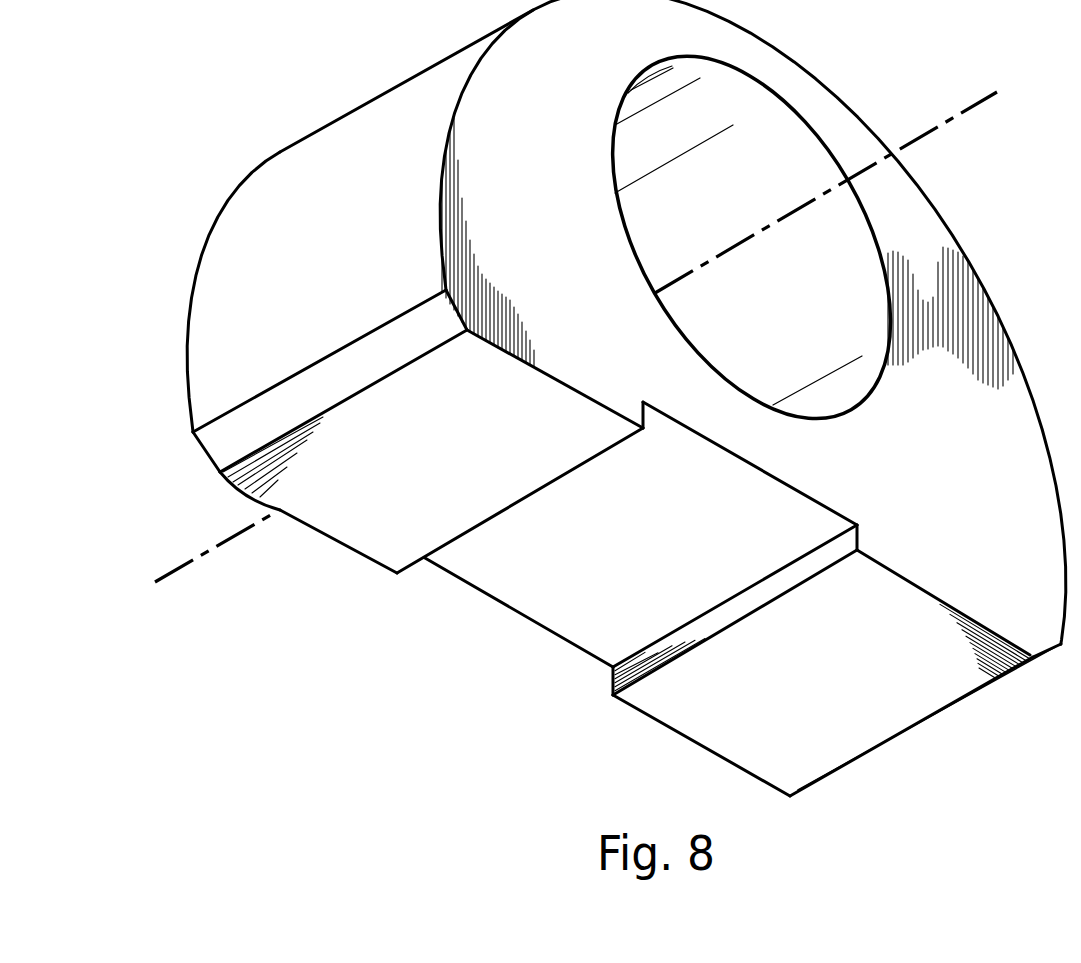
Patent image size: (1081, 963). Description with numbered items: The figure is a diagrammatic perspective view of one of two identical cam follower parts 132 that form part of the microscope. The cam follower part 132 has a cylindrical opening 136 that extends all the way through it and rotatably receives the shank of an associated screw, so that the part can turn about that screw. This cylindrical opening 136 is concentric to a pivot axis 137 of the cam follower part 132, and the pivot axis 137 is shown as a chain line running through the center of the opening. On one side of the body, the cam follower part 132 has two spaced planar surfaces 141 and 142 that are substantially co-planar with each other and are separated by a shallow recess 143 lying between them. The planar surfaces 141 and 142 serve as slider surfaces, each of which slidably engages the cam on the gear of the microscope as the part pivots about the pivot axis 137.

The cam follower part 132 is at (557, 205).
The cylindrical opening 136 is at (758, 180).
The pivot axis 137 is at (979, 103).
The planar surface 141 is at (454, 463).
The planar surface 142 is at (853, 696).
The shallow recess 143 is at (674, 561).